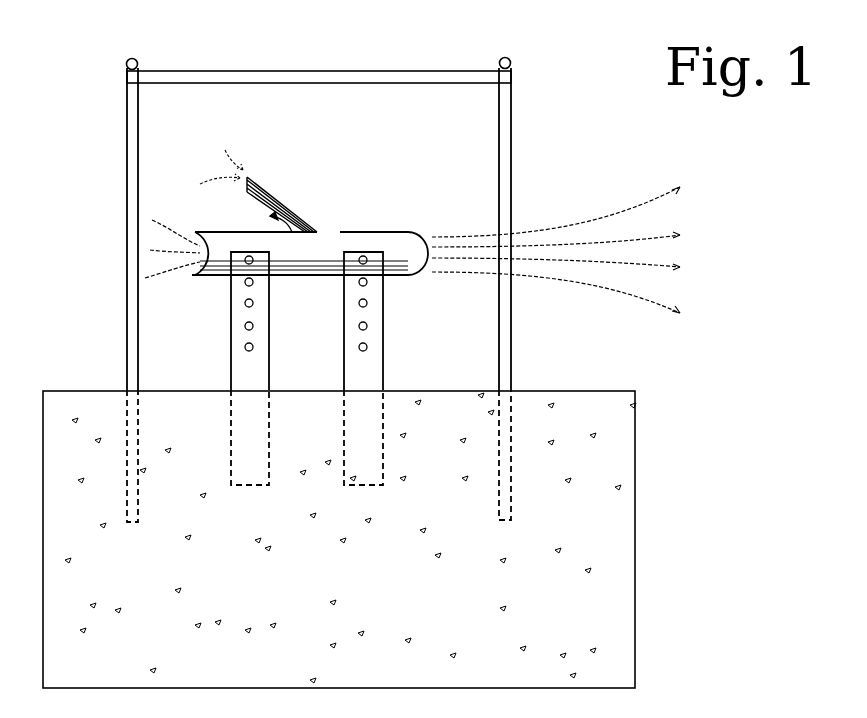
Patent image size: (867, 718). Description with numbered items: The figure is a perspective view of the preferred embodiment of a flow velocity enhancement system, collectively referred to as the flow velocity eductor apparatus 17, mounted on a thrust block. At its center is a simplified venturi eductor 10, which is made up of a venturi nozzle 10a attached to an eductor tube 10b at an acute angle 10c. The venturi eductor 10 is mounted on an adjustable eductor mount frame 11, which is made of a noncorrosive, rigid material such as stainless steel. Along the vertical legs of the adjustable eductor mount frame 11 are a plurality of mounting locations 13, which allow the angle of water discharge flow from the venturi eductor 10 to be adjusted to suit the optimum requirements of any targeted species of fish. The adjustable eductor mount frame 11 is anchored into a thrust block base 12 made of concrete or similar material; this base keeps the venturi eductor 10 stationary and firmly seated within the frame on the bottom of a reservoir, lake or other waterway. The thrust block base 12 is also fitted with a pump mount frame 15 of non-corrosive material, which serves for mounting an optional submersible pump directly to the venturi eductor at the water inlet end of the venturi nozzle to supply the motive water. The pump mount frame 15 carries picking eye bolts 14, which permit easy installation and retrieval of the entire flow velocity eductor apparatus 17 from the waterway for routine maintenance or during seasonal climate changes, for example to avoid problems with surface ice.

The venturi eductor 10 is at (346, 231).
The venturi nozzle 10a is at (293, 205).
The eductor tube 10b is at (401, 232).
The acute angle 10c is at (268, 228).
The adjustable eductor mount frame 11 is at (229, 352).
The thrust block base 12 is at (575, 391).
The mounting locations 13 is at (367, 323).
The picking eye bolts 14 is at (128, 60).
The pump mount frame 15 is at (127, 215).
The flow velocity eductor apparatus 17 is at (100, 140).